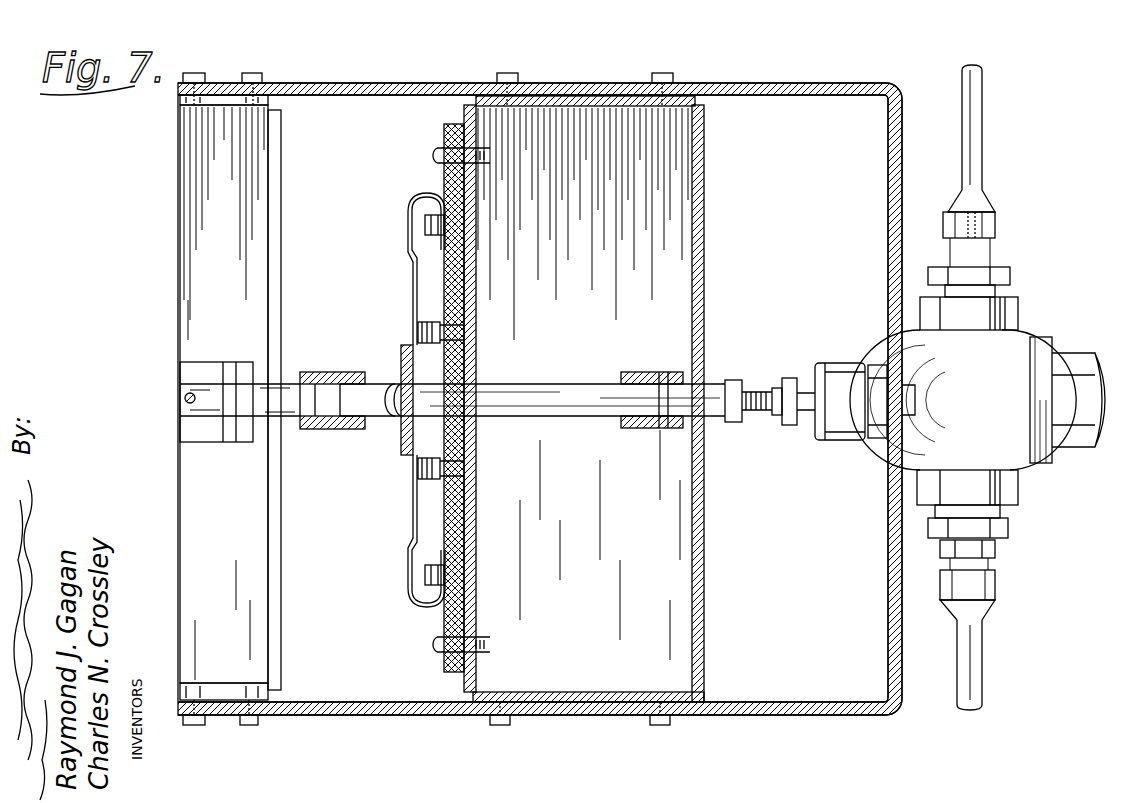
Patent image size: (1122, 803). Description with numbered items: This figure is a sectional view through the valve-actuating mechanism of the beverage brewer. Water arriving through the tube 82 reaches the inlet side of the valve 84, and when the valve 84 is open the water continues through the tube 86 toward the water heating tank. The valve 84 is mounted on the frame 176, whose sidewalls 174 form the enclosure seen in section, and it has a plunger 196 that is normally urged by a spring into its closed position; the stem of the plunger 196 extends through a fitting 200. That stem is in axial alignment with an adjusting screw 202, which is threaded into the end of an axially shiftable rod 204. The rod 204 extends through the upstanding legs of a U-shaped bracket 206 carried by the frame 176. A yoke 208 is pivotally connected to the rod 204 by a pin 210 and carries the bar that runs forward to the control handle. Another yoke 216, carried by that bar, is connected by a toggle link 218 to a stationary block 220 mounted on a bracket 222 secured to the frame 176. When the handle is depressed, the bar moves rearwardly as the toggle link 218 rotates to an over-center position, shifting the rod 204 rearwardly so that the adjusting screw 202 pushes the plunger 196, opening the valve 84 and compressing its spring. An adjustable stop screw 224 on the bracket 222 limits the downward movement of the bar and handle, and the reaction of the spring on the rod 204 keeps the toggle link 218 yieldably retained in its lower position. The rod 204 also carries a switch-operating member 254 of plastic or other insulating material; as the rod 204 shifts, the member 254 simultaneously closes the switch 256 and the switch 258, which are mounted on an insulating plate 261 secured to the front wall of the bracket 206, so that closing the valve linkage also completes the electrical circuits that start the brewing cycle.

The tube 82 is at (985, 130).
The valve 84 is at (1020, 345).
The tube 86 is at (985, 652).
The sidewalls 174 is at (762, 83).
The frame 176 is at (353, 83).
The plunger 196 is at (806, 425).
The fitting 200 is at (843, 363).
The adjusting screw 202 is at (760, 388).
The rod 204 is at (547, 390).
The U-shaped bracket 206 is at (474, 538).
The yoke 208 is at (638, 372).
The pin 210 is at (665, 430).
The yoke 216 is at (325, 372).
The toggle link 218 is at (290, 390).
The stationary block 220 is at (207, 362).
The bracket 222 is at (195, 262).
The adjustable stop screw 224 is at (185, 398).
The switch-operating member 254 is at (402, 437).
The switch 256 is at (415, 520).
The switch 258 is at (415, 282).
The insulating plate 261 is at (455, 183).